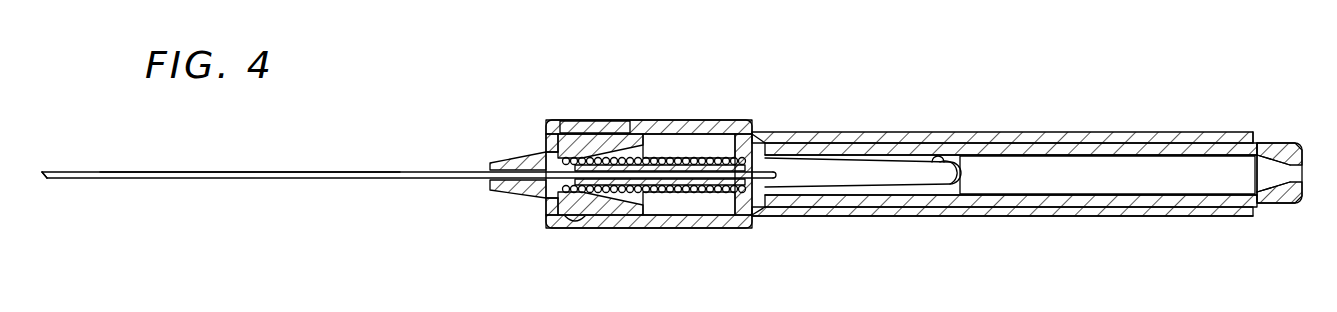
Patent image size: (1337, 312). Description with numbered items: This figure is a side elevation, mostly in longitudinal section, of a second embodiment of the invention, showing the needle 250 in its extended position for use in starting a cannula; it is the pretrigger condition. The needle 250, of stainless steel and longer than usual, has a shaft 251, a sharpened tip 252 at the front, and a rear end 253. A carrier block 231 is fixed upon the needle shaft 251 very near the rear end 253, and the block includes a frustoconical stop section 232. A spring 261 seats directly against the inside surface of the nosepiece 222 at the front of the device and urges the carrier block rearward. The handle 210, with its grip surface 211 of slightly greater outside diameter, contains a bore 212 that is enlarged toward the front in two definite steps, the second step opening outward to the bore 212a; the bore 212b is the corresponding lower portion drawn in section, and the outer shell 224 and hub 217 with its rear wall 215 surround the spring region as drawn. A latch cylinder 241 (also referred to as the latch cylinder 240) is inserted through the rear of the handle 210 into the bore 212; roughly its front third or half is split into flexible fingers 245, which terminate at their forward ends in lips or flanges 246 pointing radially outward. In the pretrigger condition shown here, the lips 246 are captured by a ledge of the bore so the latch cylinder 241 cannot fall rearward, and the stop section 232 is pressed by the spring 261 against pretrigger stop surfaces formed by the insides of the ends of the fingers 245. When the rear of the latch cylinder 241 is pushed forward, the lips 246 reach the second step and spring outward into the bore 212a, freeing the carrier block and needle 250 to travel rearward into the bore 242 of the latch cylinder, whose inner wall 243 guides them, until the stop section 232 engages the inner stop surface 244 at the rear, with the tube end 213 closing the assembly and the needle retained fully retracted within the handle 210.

The handle 210 is at (1071, 260).
The grip surface 211 is at (1131, 142).
The bore 212 is at (1198, 162).
The bore (second step) 212a is at (697, 146).
The lower chamber 212b is at (703, 208).
The tube end 213 is at (1259, 137).
The hub rear wall 215 is at (745, 213).
The hub 217 is at (531, 128).
The nosepiece 222 is at (507, 160).
The hub shell 224 is at (579, 131).
The carrier block 231 is at (712, 148).
The frustoconical stop section 232 is at (791, 143).
The latch cylinder 240 is at (1280, 222).
The latch cylinder 241 is at (1262, 212).
The bore of latch cylinder 242 is at (1068, 150).
The inner barrel wall 243 is at (950, 160).
The inner stop surface 244 is at (1284, 152).
The flexible fingers 245 is at (906, 158).
The lips or flanges 246 is at (766, 128).
The needle 250 is at (364, 183).
The needle shaft 251 is at (293, 151).
The sharpened tip 252 is at (43, 178).
The rear end 253 is at (902, 176).
The spring 261 is at (672, 200).